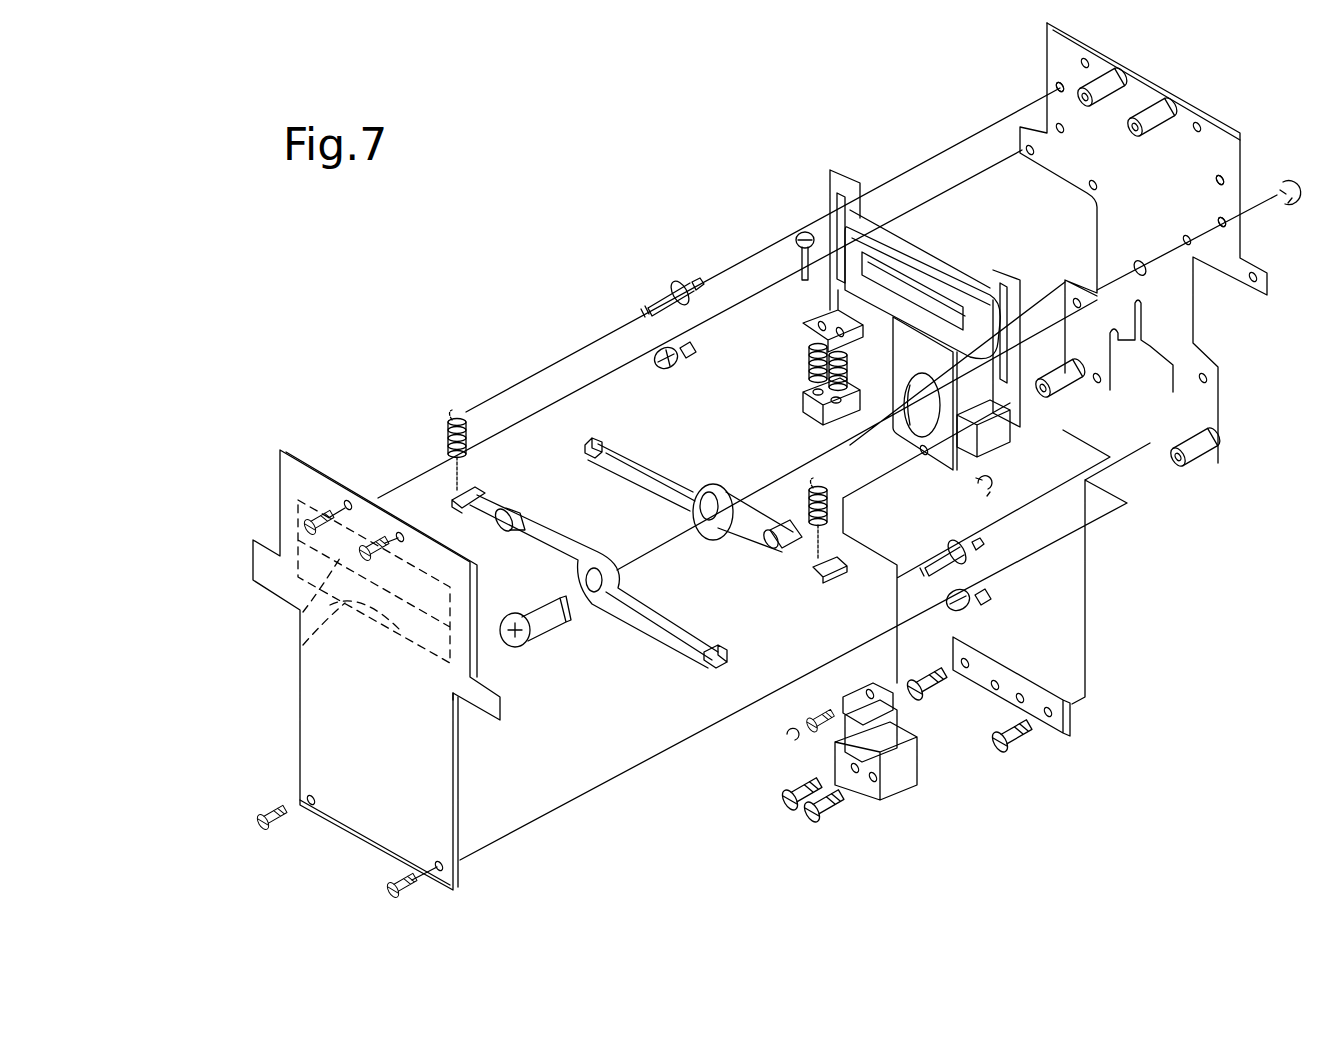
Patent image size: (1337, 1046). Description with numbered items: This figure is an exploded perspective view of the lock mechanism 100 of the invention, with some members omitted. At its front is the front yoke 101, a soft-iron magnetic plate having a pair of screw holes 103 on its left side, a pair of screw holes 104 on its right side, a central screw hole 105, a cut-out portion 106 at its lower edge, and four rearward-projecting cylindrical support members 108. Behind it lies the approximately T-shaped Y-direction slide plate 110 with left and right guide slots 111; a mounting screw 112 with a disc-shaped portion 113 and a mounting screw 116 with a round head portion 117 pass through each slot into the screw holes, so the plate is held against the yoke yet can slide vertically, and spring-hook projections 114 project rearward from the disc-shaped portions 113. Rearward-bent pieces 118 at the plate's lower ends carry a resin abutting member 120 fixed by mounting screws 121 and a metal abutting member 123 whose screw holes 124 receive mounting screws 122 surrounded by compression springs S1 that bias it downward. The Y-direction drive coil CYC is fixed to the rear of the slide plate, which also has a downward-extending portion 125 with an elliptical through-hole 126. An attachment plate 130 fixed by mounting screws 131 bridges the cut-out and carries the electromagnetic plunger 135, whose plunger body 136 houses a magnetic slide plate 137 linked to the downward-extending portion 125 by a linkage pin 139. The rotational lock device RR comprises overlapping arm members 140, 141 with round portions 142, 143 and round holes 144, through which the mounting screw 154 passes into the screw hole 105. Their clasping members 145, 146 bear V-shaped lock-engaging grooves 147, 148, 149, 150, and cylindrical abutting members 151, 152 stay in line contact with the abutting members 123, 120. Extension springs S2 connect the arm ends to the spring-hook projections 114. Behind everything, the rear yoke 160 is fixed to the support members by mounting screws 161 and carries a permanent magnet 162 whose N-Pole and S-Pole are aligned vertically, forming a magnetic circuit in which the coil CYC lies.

The shutter drive unit 100 is at (608, 211).
The front yoke 101 is at (1137, 95).
The screw holes 103 is at (1066, 130).
The screw holes 104 is at (1218, 222).
The screw hole 105 is at (1145, 272).
The cut-out portion 106 is at (1170, 393).
The cylindrical support members 108 is at (1103, 100).
The Y-direction slide plate 110 is at (913, 238).
The guide slots 111 is at (830, 187).
The mounting screw 112 is at (697, 278).
The disc-shaped portion 113 is at (675, 288).
The spring-hook projections 114 is at (657, 296).
The mounting screw 116 is at (690, 352).
The round head portion 117 is at (668, 368).
The rearward-bent pieces 118 is at (805, 333).
The abutting member 120 is at (990, 488).
The mounting screws 121 is at (1000, 455).
The mounting screws 122 is at (797, 240).
The abutting member 123 is at (800, 392).
The screw holes 124 is at (830, 410).
The downward-extending portion 125 is at (920, 360).
The through-hole 126 is at (905, 428).
The attachment plate 130 is at (1010, 680).
The mounting screws 131 is at (1005, 745).
The electromagnetic plunger 135 is at (903, 788).
The plunger body 136 is at (880, 800).
The magnetic slide plate 137 is at (860, 690).
The linkage pin 139 is at (805, 717).
The arm member 140 is at (619, 635).
The arm member 141 is at (705, 466).
The round portion 142 is at (590, 612).
The round portion 143 is at (727, 540).
The round hole 144 is at (705, 522).
The clasping members 145 is at (598, 528).
The clasping members 146 is at (645, 482).
The lock-engaging groove 147 is at (480, 510).
The lock-engaging groove 148 is at (710, 668).
The lock-engaging groove 149 is at (588, 455).
The lock-engaging groove 150 is at (830, 583).
The cylindrical abutting member 151 is at (518, 533).
The cylindrical abutting member 152 is at (775, 555).
The mounting screw 154 is at (545, 640).
The rear yoke 160 is at (425, 770).
The mounting screws 161 is at (370, 540).
The permanent magnet 162 is at (395, 640).
The compression springs S1 is at (810, 372).
The extension springs S2 is at (450, 420).
The rotational lock device RR is at (531, 423).
The Y-direction drive coil CYC is at (953, 293).
The N-pole N-Pole is at (303, 612).
The S-pole S-Pole is at (303, 645).